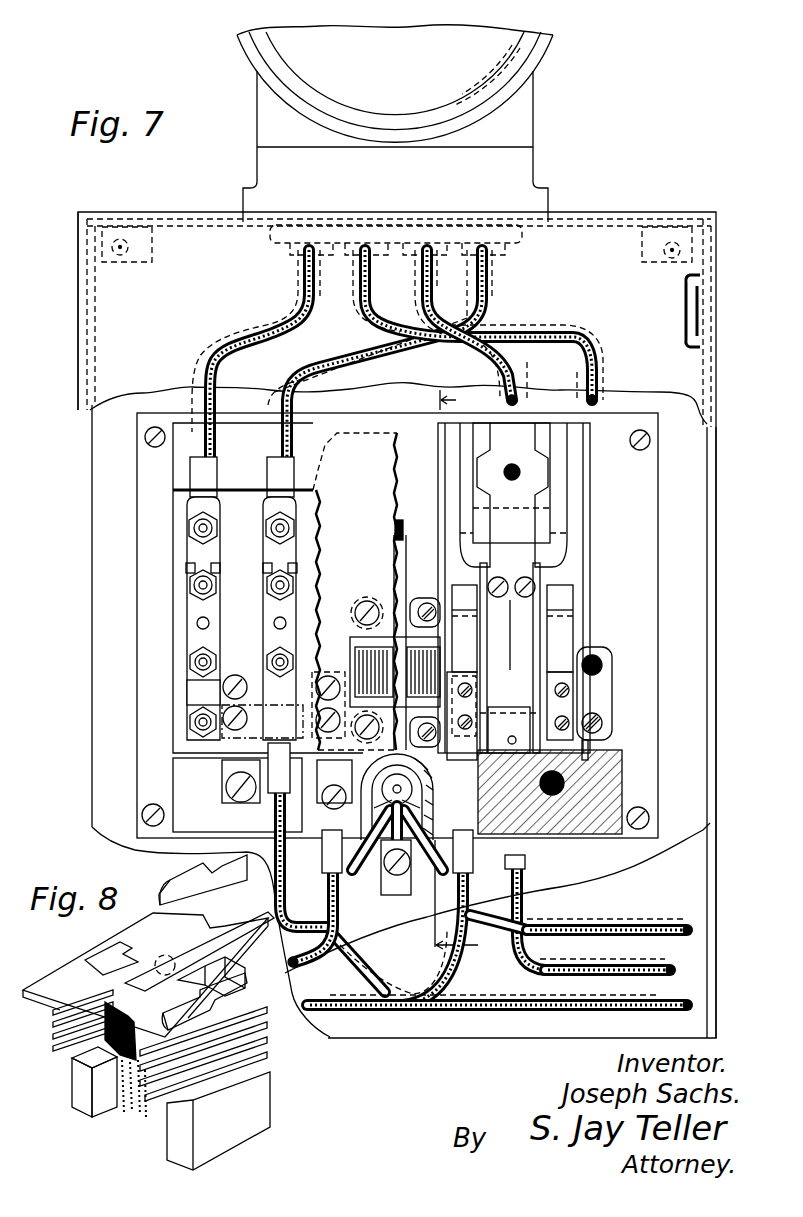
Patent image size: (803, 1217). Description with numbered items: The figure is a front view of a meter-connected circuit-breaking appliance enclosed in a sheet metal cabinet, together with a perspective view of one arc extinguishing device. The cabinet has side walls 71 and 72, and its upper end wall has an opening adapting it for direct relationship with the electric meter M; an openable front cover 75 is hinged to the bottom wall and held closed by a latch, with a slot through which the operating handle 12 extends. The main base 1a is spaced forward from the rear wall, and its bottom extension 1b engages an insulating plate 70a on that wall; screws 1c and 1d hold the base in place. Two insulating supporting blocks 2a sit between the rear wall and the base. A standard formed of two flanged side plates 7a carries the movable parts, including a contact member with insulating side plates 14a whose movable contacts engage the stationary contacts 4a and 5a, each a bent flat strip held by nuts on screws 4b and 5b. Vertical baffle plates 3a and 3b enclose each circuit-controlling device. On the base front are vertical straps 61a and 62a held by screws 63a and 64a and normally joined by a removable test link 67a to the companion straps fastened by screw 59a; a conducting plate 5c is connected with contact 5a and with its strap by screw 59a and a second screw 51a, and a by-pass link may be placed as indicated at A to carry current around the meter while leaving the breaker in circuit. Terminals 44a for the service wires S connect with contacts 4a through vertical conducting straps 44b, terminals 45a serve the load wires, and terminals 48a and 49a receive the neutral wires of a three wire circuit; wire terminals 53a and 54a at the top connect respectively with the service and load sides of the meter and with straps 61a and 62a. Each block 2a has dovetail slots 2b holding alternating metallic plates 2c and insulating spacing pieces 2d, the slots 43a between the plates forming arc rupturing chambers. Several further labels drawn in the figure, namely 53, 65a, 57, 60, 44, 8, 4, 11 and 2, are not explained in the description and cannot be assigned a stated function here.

In FIG. 7, the electric meter M is at (512, 48).
In FIG. 7, the front cover 75 is at (606, 237).
In FIG. 7, the side wall 72 is at (96, 538).
In FIG. 7, the side wall 71 is at (708, 543).
In FIG. 7, the insulating plate 70a is at (152, 483).
In FIG. 7, the line terminal 53 is at (197, 468).
In FIG. 7, the wire terminal 54a is at (268, 462).
In FIG. 7, the screw 1c is at (297, 470).
In FIG. 7, the main base 1a is at (180, 607).
In FIG. 7, the vertical strap 61a is at (193, 553).
In FIG. 7, the vertical strap 62a is at (292, 553).
In FIG. 7, the screw 63a is at (199, 587).
In FIG. 7, the screw 64a is at (290, 587).
In FIG. 7, the terminal strip 65a is at (296, 614).
In FIG. 7, the test link 67a is at (196, 630).
In FIG. 7, the screw 59a is at (196, 662).
In FIG. 7, the connector block 57 is at (192, 695).
In FIG. 7, the screw 51a is at (197, 726).
In FIG. 7, the clamping nut 60 is at (286, 660).
In FIG. 7, the by-pass link A is at (276, 687).
In FIG. 7, the screw 5b is at (237, 680).
In FIG. 7, the wire terminal 53a is at (292, 700).
In FIG. 7, the stationary electric contact 5a is at (445, 669).
In FIG. 7, the stationary electric contact 4a is at (469, 615).
In FIG. 7, the screw 1d is at (232, 790).
In FIG. 7, the terminal 45a is at (268, 757).
In FIG. 7, the load terminal 44 is at (315, 857).
In FIG. 7, the service wire S is at (343, 996).
In FIG. 7, the solenoid coil 8 is at (364, 612).
In FIG. 7, the side plate 7a is at (368, 602).
In FIG. 7, the operating handle 12 is at (399, 546).
In FIG. 7, the terminal 48a is at (378, 858).
In FIG. 7, the terminal 49a is at (445, 852).
In FIG. 7, the metallic plate 2c is at (577, 515).
In FIG. 8, the metallic plate 2c is at (270, 1012).
In FIG. 7, the insulating spacing piece 2d is at (560, 470).
In FIG. 8, the insulating spacing piece 2d is at (190, 880).
In FIG. 7, the side plate 14a is at (487, 563).
In FIG. 7, the conducting strap 44b is at (472, 703).
In FIG. 7, the screw 4b is at (466, 728).
In FIG. 7, the conducting plate 5c is at (617, 683).
In FIG. 7, the extension 1b is at (615, 783).
In FIG. 7, the terminal 44a is at (474, 917).
In FIG. 7, the load conductors 4 is at (499, 957).
In FIG. 7, the supporting block 2a is at (507, 430).
In FIG. 8, the supporting block 2a is at (143, 1127).
In FIG. 7, the baffle plate 3a is at (440, 432).
In FIG. 7, the baffle plate 3b is at (588, 436).
In FIG. 7, the meter socket 11 is at (469, 673).
In FIG. 8, the contact plate 2 is at (145, 965).
In FIG. 8, the dovetail slot 2b is at (125, 962).
In FIG. 8, the slot 43a is at (263, 1050).